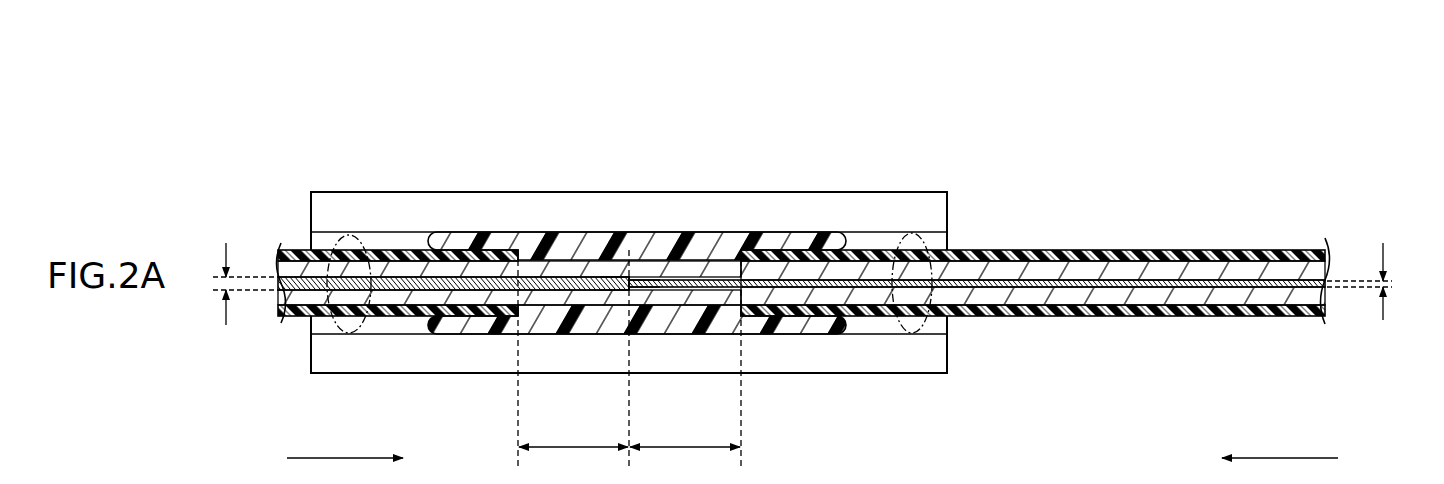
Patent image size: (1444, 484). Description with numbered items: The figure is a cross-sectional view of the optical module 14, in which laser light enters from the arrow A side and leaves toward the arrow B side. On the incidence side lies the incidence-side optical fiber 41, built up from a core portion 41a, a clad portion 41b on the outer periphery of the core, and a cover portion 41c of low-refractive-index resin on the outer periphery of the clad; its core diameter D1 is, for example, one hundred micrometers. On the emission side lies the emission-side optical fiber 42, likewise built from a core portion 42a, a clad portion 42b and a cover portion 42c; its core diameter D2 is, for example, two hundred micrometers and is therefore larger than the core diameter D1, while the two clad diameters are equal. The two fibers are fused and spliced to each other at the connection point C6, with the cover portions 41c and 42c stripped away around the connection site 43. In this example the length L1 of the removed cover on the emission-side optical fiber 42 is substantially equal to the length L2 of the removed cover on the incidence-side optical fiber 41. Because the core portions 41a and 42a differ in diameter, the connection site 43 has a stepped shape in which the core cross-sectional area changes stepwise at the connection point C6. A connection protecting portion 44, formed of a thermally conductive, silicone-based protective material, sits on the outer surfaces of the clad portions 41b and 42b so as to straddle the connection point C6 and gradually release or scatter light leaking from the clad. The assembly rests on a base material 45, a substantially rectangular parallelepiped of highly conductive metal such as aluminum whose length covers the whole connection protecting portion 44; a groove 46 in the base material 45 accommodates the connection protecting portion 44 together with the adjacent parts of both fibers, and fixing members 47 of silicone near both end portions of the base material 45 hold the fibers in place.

The optical module 14 is at (1316, 134).
The incidence-side optical fiber 41 is at (1263, 318).
The core portion 41a is at (1283, 277).
The clad portion 41b is at (1203, 274).
The cover portion 41c is at (1141, 234).
The emission-side optical fiber 42 is at (300, 318).
The core portion 42a is at (383, 284).
The clad portion 42b is at (325, 271).
The cover portion 42c is at (297, 242).
The connection site 43 is at (637, 272).
The connection protecting portion 44 is at (584, 207).
The base material 45 is at (486, 192).
The groove 46 is at (327, 326).
The fixing members 47 is at (356, 328).
The connection point C6 is at (634, 289).
The length of the removed cover in the emission-side optical fiber L1 is at (573, 359).
The length of the removed cover in the incidence-side optical fiber L2 is at (685, 359).
The core diameter D1 is at (1374, 281).
The core diameter D2 is at (232, 284).
The arrow A side A is at (1275, 457).
The arrow B side B is at (350, 458).